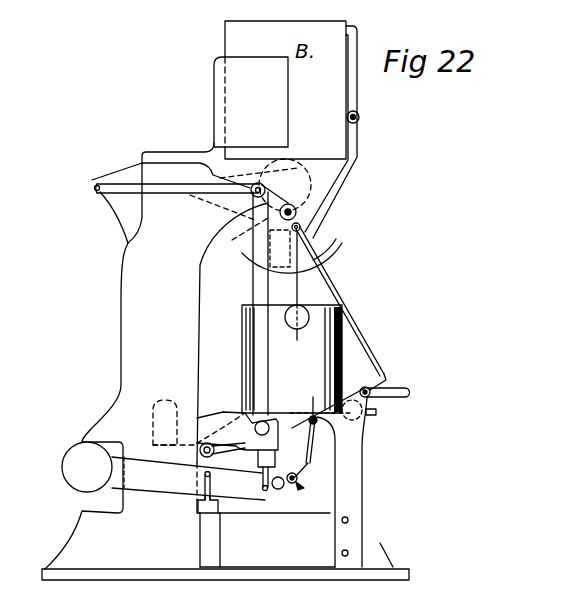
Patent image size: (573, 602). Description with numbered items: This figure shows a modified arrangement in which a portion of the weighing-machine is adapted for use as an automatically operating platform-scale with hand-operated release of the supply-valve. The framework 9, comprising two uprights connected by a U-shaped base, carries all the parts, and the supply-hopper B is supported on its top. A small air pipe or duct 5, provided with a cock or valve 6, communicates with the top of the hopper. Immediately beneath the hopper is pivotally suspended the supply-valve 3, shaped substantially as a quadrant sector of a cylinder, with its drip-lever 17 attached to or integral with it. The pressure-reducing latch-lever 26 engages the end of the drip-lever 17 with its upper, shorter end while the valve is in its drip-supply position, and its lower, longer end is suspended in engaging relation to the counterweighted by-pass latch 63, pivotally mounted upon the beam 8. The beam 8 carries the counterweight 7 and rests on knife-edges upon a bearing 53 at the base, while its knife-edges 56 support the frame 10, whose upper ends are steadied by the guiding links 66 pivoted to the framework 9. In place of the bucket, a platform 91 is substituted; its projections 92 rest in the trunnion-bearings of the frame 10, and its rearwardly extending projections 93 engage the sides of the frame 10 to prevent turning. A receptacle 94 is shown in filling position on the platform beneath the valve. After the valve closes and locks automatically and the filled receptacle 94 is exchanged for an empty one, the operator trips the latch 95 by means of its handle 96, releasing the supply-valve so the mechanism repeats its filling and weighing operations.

The supply-valve 3 is at (331, 243).
The air pipe or duct 5 is at (359, 163).
The cock or valve 6 is at (360, 120).
The counterweight 7 is at (72, 475).
The beam 8 is at (172, 482).
The framework 9 is at (132, 337).
The frame 10 is at (262, 363).
The drip-lever 17 is at (340, 287).
The pressure-reducing latch-lever 26 is at (309, 441).
The bearing 53 is at (198, 508).
The knife-edges 56 is at (265, 491).
The counterweighted by-pass latch 63 is at (297, 479).
The steadying or guiding links 66 is at (178, 189).
The platform 91 is at (270, 417).
The projections 92 is at (270, 430).
The projections 93 is at (216, 455).
The receptacle 94 is at (330, 347).
The latch 95 is at (385, 380).
The handle 96 is at (404, 399).